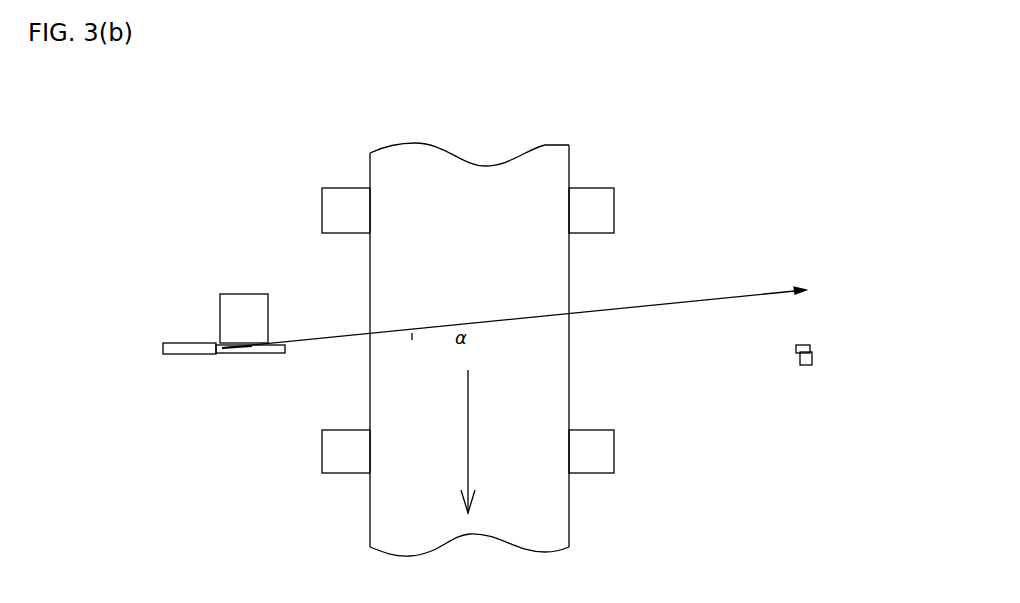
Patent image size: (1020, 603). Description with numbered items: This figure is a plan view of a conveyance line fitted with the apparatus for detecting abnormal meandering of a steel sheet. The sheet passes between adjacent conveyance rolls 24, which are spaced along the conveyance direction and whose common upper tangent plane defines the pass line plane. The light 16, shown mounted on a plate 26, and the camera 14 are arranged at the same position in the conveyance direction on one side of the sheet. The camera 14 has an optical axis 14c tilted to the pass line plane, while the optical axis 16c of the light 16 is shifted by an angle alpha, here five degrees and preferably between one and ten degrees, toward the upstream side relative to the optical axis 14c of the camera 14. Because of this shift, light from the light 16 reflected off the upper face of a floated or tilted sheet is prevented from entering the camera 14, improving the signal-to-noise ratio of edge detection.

The conveyance rolls 24 is at (324, 192).
The plate 26 is at (179, 343).
The light 16 is at (226, 355).
The optical axis of the light 16c is at (730, 298).
The optical axis of the camera 14c is at (731, 347).
The camera 14 is at (812, 352).